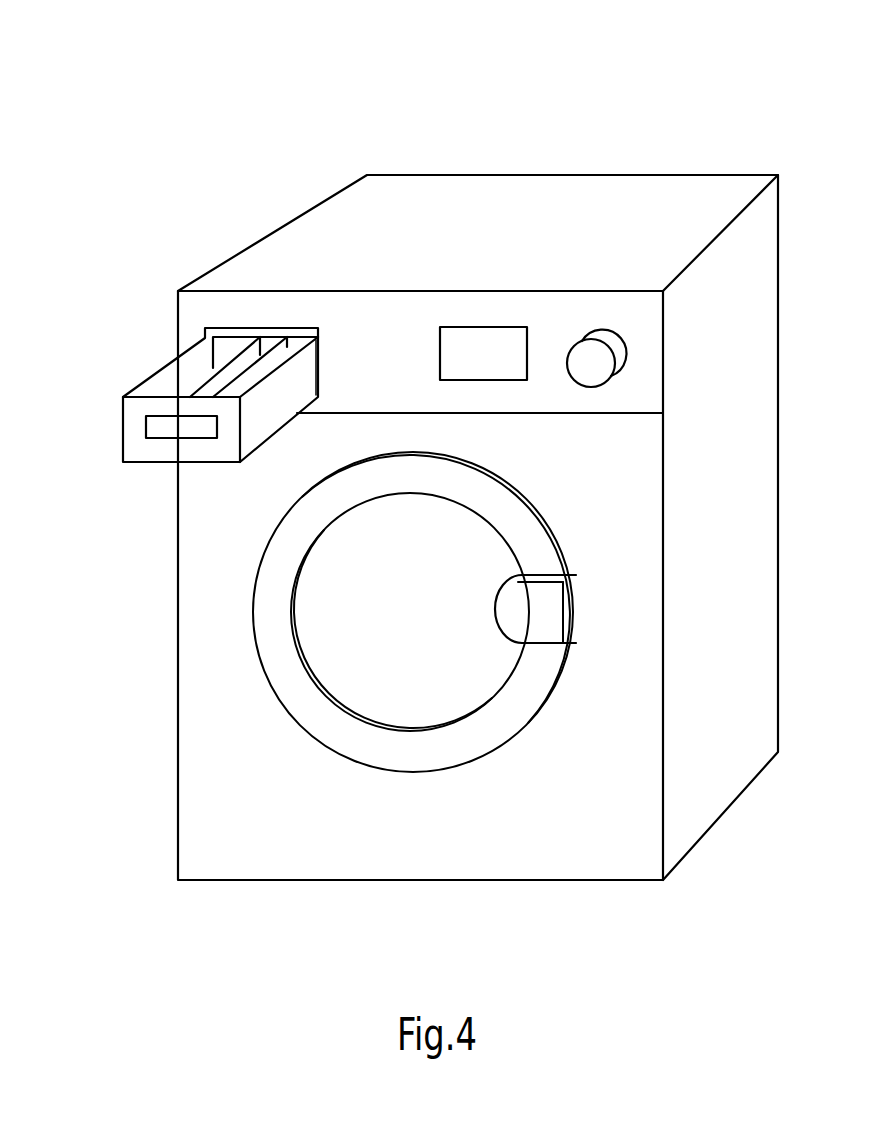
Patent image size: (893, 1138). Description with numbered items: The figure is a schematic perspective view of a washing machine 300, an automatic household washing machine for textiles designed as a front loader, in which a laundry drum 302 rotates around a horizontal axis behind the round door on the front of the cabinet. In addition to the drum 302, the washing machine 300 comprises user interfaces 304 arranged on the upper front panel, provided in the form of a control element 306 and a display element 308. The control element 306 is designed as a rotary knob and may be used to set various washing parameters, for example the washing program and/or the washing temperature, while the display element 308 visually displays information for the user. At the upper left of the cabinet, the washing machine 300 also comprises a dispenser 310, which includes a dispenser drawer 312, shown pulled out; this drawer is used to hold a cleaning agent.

The washing machine 300 is at (253, 122).
The laundry drum 302 is at (483, 550).
The user interfaces 304 is at (628, 387).
The control element 306 is at (593, 353).
The display element 308 is at (467, 343).
The dispenser 310 is at (140, 360).
The dispenser drawer 312 is at (122, 428).